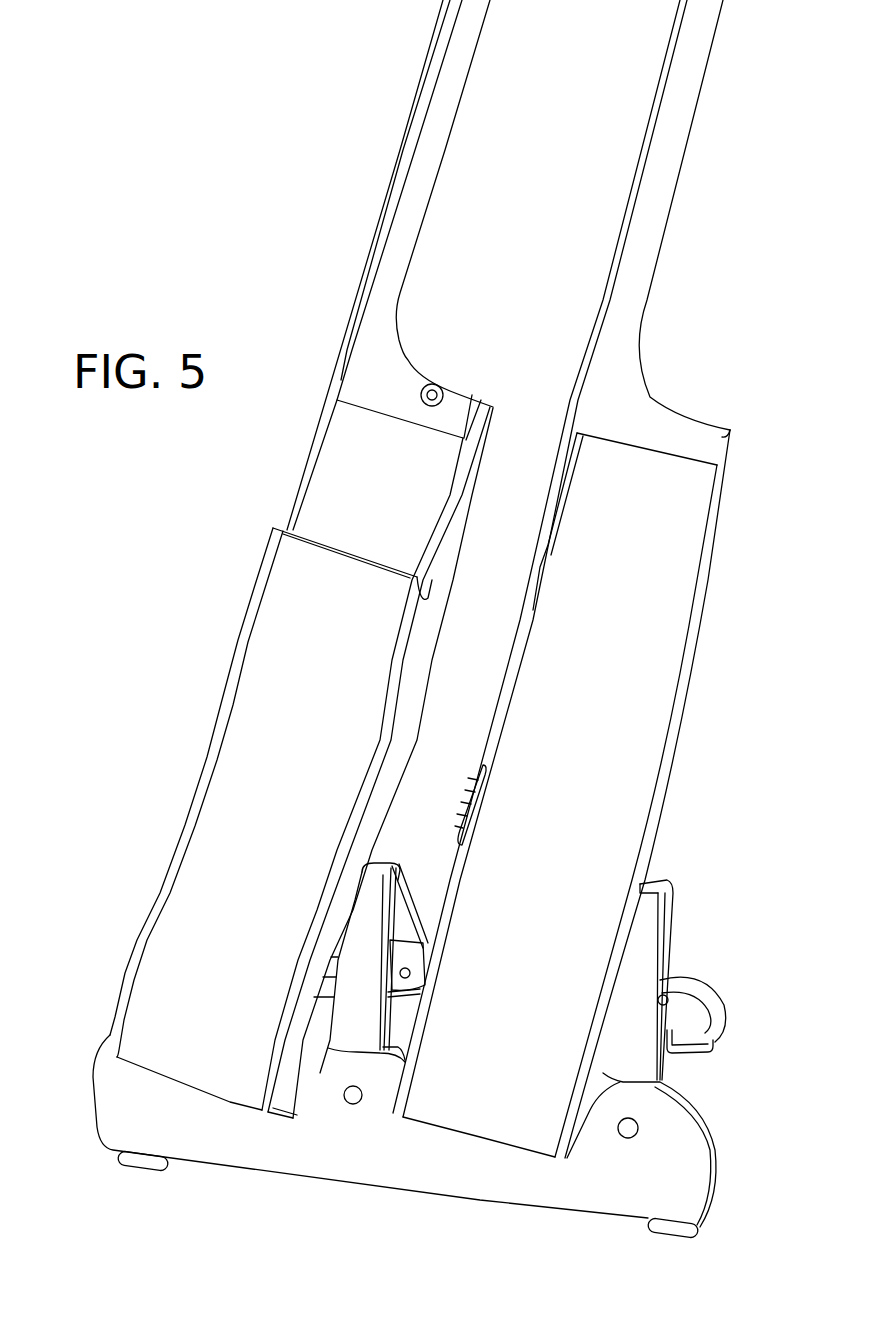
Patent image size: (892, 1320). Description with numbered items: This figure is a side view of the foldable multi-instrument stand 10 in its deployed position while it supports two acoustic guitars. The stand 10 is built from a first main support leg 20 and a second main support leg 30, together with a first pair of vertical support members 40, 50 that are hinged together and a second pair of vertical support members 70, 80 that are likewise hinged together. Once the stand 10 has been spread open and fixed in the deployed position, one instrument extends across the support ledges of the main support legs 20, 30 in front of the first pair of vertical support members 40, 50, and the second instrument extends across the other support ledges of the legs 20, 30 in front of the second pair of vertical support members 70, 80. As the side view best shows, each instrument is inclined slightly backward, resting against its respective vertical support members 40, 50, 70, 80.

The foldable multi-instrument stand 10 is at (75, 1008).
The first main support leg 20 is at (237, 1157).
The second main support leg 30 is at (713, 1040).
The vertical support member 40 is at (378, 868).
The vertical support member 50 is at (413, 900).
The vertical support member 70 is at (665, 990).
The vertical support member 80 is at (667, 880).